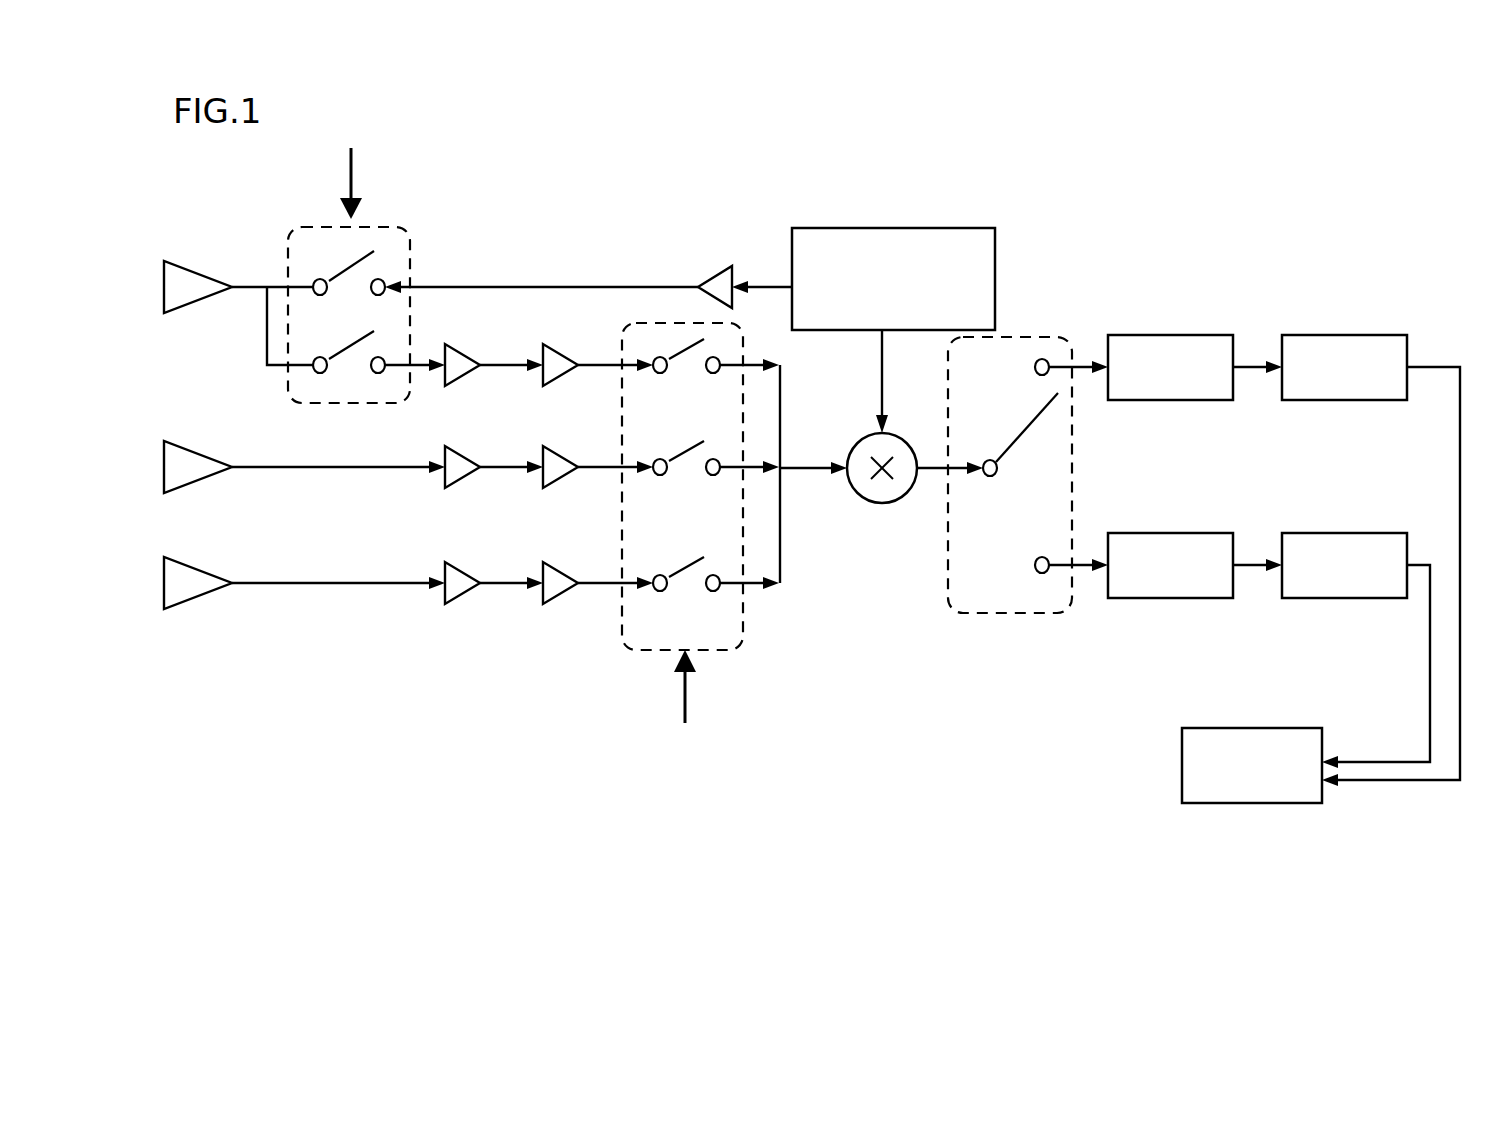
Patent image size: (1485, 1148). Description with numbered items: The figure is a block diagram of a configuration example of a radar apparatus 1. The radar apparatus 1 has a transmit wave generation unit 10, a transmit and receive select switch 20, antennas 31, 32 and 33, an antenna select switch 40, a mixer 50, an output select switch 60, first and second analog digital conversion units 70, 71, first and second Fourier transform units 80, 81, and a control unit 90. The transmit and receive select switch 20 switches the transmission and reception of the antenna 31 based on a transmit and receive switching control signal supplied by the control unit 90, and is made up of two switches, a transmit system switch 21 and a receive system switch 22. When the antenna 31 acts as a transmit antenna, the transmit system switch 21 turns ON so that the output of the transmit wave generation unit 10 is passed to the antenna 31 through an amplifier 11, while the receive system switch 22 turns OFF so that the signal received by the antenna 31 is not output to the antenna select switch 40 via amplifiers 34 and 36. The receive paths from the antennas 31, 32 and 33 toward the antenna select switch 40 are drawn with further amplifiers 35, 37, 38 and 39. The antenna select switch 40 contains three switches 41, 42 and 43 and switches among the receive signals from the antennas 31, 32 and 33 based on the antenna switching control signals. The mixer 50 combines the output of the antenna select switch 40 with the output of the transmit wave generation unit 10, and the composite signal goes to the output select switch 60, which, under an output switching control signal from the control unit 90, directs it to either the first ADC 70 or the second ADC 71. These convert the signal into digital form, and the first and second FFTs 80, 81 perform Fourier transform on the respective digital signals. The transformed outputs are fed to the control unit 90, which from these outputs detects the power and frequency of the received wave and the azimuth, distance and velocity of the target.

The radar apparatus 1 is at (812, 515).
The transmit wave generation unit 10 is at (927, 228).
The amplifier 11 is at (713, 266).
The transmit and receive select switch 20 is at (403, 227).
The transmit system switch 21 is at (343, 272).
The receive system switch 22 is at (348, 354).
The antenna 31 is at (198, 263).
The antenna 32 is at (190, 443).
The antenna 33 is at (190, 607).
The amplifier 34 is at (467, 345).
The amplifier 35 is at (565, 345).
The amplifier 36 is at (462, 485).
The amplifier 37 is at (562, 485).
The amplifier 38 is at (462, 602).
The amplifier 39 is at (565, 602).
The antenna select switch 40 is at (743, 630).
The switch 41 is at (703, 338).
The switch 42 is at (700, 442).
The switch 43 is at (700, 562).
The mixer 50 is at (882, 503).
The output select switch 60 is at (1032, 337).
The first analog digital conversion unit (ADC) 70 is at (1205, 335).
The second analog digital conversion unit (ADC) 71 is at (1125, 598).
The first Fourier transform unit (FFT) 80 is at (1378, 335).
The second Fourier transform unit (FFT) 81 is at (1367, 598).
The control unit 90 is at (1220, 803).